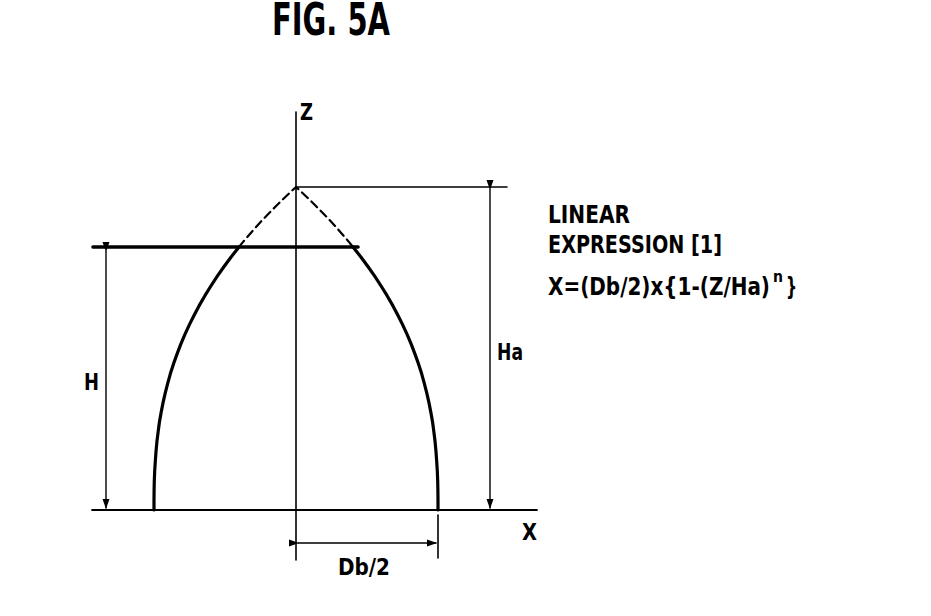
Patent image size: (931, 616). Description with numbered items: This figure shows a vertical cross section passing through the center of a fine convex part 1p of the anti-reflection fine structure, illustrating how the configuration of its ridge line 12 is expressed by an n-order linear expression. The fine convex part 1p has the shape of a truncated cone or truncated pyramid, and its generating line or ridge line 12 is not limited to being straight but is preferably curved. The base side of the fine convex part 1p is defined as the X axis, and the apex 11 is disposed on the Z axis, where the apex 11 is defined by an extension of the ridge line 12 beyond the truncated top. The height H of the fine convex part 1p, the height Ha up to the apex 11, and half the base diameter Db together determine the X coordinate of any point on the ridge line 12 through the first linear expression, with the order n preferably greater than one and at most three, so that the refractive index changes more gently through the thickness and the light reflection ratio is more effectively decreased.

The apex 11 is at (297, 186).
The ridge line 12 is at (194, 318).
The fine convex part 1p is at (203, 296).